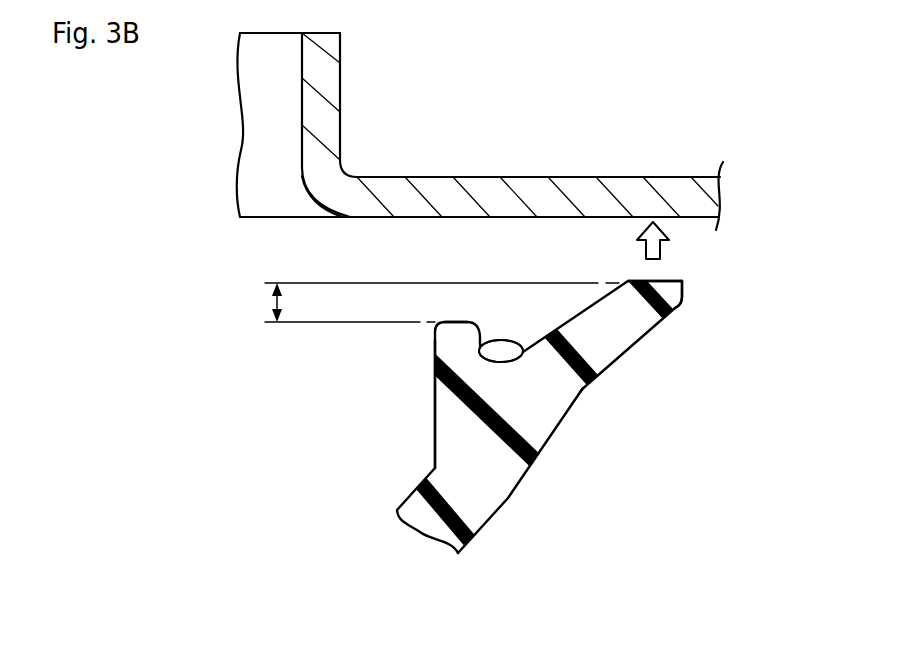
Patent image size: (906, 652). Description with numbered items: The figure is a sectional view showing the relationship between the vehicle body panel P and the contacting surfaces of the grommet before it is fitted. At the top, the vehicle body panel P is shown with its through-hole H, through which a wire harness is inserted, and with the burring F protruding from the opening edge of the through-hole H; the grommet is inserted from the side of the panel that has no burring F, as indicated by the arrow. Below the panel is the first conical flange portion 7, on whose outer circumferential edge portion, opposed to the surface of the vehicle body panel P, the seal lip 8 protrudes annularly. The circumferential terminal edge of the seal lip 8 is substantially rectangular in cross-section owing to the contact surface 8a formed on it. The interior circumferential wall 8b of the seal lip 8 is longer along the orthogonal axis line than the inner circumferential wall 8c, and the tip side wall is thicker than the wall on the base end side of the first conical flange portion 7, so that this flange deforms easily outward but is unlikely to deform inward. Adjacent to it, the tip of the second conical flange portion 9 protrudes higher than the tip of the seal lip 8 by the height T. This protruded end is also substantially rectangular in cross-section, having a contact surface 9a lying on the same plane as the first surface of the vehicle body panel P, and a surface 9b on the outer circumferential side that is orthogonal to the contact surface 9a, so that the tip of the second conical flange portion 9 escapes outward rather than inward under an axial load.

The through-hole H is at (277, 40).
The burring F is at (341, 124).
The vehicle body panel P is at (615, 177).
The height T is at (434, 302).
The first conical flange portion 7 is at (386, 504).
The seal lip 8 is at (424, 364).
The contact surface 8a is at (458, 322).
The interior circumferential wall 8b is at (435, 412).
The inner circumferential wall 8c is at (523, 352).
The second conical flange portion 9 is at (637, 366).
The contact surface 9a is at (666, 281).
The surface of the tip portion 9b is at (684, 293).